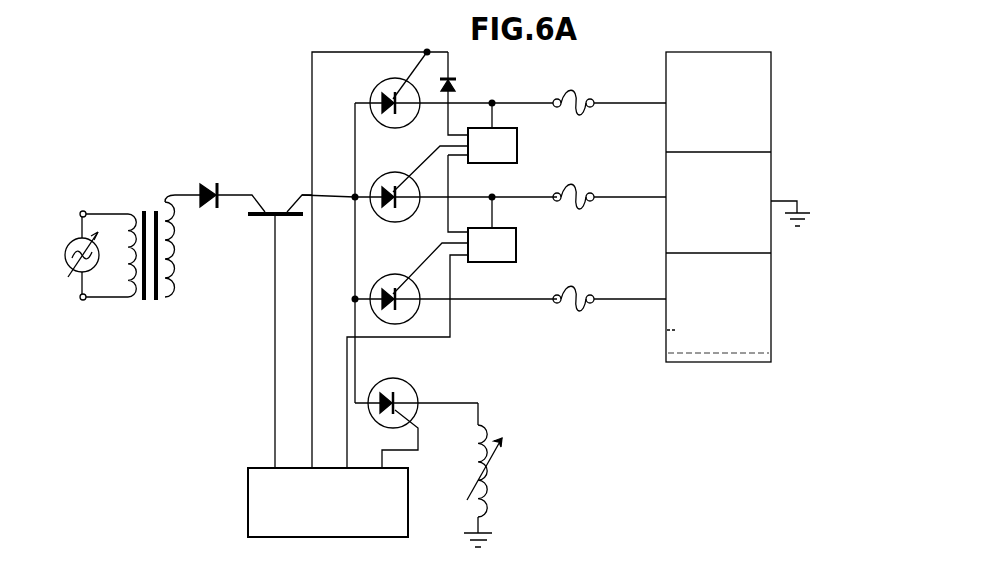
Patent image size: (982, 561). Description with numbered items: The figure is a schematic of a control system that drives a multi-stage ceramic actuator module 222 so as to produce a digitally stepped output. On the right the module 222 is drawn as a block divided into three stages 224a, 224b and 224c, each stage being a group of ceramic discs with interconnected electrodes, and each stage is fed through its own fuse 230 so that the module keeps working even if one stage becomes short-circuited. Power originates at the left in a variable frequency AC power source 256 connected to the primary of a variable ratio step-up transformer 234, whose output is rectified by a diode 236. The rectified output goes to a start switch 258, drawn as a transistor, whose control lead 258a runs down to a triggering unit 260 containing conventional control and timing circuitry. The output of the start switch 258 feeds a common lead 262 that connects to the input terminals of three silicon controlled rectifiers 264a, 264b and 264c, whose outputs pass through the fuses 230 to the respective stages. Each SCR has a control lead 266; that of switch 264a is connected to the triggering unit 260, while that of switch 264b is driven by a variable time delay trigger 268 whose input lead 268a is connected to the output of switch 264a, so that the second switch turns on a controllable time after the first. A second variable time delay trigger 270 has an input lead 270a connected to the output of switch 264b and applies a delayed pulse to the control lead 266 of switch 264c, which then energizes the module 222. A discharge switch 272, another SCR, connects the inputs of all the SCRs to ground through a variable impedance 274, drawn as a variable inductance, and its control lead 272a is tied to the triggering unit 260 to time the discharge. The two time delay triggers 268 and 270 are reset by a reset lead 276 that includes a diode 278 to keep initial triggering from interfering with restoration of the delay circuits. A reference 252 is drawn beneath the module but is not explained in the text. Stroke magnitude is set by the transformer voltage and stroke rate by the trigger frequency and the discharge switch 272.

The module 222 is at (780, 67).
The stage 224a is at (682, 80).
The stage 224b is at (676, 222).
The stage 224c is at (667, 330).
The fuse 230 is at (590, 110).
The variable ratio step-up transformer 234 is at (150, 300).
The diode 236 is at (199, 192).
The load housing 252 is at (709, 363).
The variable frequency AC power source 256 is at (78, 275).
The start switch 258 is at (264, 211).
The control lead 258a is at (275, 400).
The triggering unit 260 is at (248, 512).
The common lead 262 is at (355, 135).
The silicon control rectifier 264a is at (411, 129).
The silicon control rectifier 264b is at (411, 222).
The silicon control rectifier 264c is at (415, 315).
The control lead 266 is at (410, 75).
The variable time delay trigger 268 is at (517, 160).
The input lead 268a is at (494, 118).
The second variable time delay trigger 270 is at (516, 254).
The input lead 270a is at (494, 215).
The discharge switch 272 is at (414, 388).
The control lead 272a is at (410, 452).
The variable impedance 274 is at (491, 483).
The reset lead 276 is at (347, 450).
The diode 278 is at (457, 84).